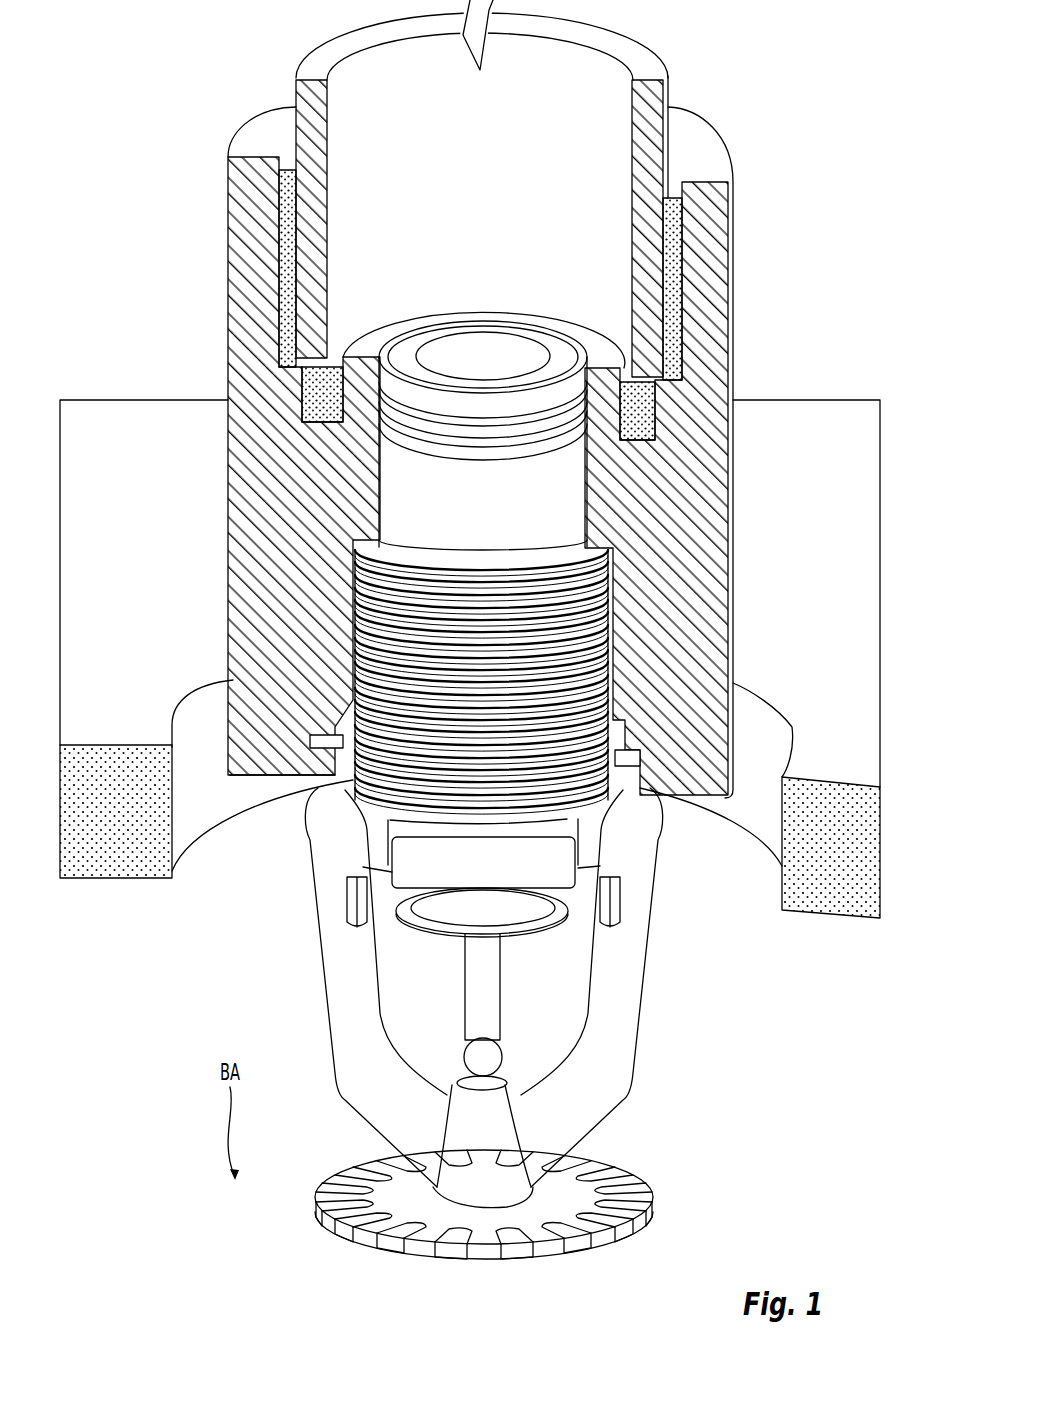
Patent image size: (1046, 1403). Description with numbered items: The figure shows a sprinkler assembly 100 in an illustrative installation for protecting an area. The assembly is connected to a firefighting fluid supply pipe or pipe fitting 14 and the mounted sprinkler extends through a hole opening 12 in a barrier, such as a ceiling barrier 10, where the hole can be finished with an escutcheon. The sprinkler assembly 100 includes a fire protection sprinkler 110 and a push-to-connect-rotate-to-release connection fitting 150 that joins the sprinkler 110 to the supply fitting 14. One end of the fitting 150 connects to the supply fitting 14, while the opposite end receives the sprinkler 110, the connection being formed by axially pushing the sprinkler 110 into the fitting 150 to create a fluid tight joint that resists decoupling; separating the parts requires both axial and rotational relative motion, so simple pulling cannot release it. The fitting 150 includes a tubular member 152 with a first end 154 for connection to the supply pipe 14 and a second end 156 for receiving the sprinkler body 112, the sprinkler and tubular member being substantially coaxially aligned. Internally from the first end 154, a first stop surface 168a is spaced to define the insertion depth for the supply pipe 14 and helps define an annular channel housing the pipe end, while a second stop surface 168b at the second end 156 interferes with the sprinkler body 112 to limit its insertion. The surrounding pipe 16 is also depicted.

The ceiling barrier 10 is at (860, 857).
The hole opening 12 is at (410, 904).
The fluid supply pipe or pipe fitting 14 is at (672, 117).
The pipe branch line 16 is at (836, 413).
The sprinkler assembly 100 is at (448, 683).
The fire protection sprinkler 110 is at (357, 663).
The sprinkler body 112 is at (572, 492).
The connection fitting 150 is at (470, 486).
The tubular member 152 is at (232, 445).
The first end 154 is at (231, 231).
The second end 156 is at (234, 777).
The first stop surface 168a is at (662, 466).
The second stop surface 168b is at (627, 528).